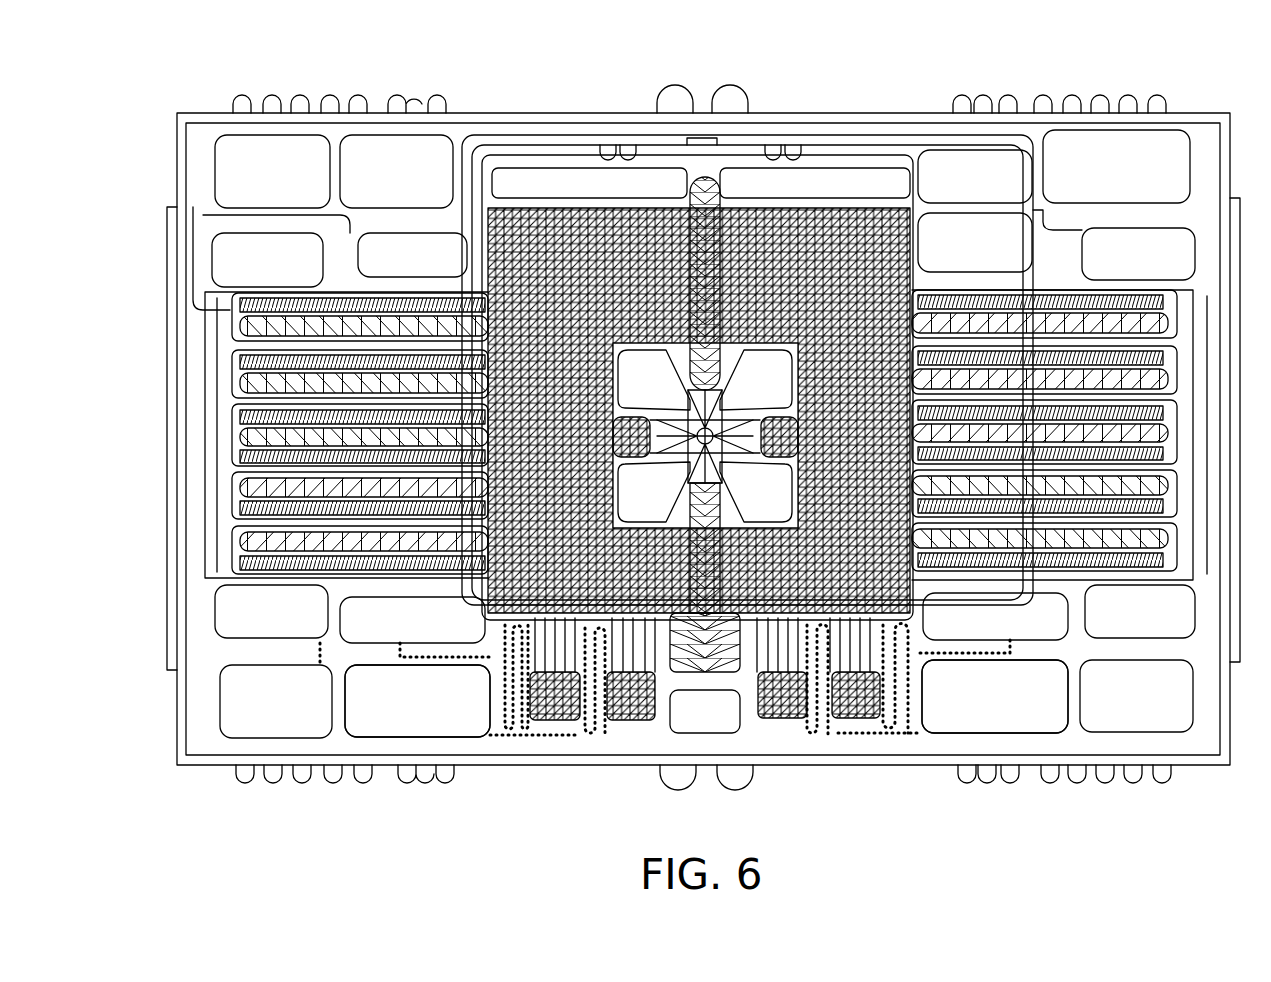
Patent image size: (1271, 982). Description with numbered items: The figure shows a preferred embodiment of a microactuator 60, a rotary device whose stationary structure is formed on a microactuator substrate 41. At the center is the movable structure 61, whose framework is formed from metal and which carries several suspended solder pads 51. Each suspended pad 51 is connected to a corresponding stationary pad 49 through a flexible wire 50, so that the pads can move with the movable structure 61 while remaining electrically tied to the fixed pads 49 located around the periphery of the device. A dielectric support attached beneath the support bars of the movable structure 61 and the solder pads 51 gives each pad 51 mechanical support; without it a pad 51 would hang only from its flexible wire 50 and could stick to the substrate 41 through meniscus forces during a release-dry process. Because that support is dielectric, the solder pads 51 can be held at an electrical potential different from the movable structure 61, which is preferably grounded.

The microactuator 60 is at (152, 98).
The movable structure 61 is at (583, 240).
The suspended solder pad 51 is at (560, 725).
The flexible wire 50 is at (510, 733).
The stationary pad 49 is at (235, 730).
The microactuator substrate 41 is at (1140, 720).